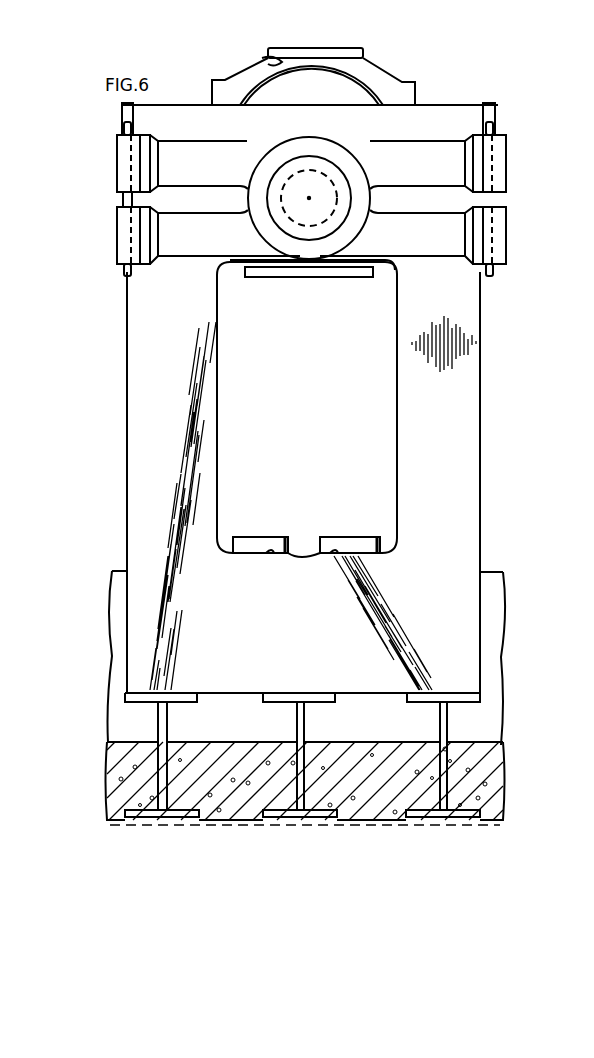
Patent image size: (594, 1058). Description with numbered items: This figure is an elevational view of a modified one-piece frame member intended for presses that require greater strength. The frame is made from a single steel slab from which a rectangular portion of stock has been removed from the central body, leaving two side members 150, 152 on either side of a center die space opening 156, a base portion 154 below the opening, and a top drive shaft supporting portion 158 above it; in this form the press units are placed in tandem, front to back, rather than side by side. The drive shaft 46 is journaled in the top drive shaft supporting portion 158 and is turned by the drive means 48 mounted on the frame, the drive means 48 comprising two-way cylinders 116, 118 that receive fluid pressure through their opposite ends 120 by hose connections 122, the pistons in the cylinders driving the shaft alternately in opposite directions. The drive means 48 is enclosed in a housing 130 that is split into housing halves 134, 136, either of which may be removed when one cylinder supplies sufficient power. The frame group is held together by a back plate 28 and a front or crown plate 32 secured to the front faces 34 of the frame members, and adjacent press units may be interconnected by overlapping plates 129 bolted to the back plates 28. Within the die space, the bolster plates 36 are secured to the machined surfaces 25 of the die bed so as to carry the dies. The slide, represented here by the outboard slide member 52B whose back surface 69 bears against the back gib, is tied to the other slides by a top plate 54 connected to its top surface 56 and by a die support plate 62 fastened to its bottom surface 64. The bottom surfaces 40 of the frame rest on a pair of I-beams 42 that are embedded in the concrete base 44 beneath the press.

The machined surfaces 25 is at (332, 553).
The back plate 28 is at (489, 103).
The front or crown plate 32 is at (127, 113).
The front faces 34 is at (123, 199).
The bolster plates 36 is at (274, 537).
The bottom surfaces 40 is at (182, 692).
The I-beams 42 is at (300, 730).
The concrete base 44 is at (117, 587).
The drive shaft 46 is at (309, 198).
The drive means 48 is at (200, 251).
The outboard slide member 52B is at (380, 80).
The top plate 54 is at (266, 50).
The top surface 56 is at (262, 58).
The die support plate 62 is at (328, 277).
The bottom surfaces 64 is at (301, 278).
The back surfaces 69 is at (414, 92).
The cylinder 116 is at (311, 233).
The cylinder 118 is at (311, 165).
The opposite ends 120 is at (117, 158).
The hose connections 122 is at (127, 125).
The plates 129 is at (0, 146).
The housing 130 is at (291, 140).
The housing half 134 is at (410, 245).
The housing half 136 is at (397, 150).
The side member 150 is at (189, 384).
The side member 152 is at (405, 374).
The base portion 154 is at (360, 678).
The center die space opening 156 is at (297, 476).
The top drive shaft supporting portion 158 is at (416, 120).